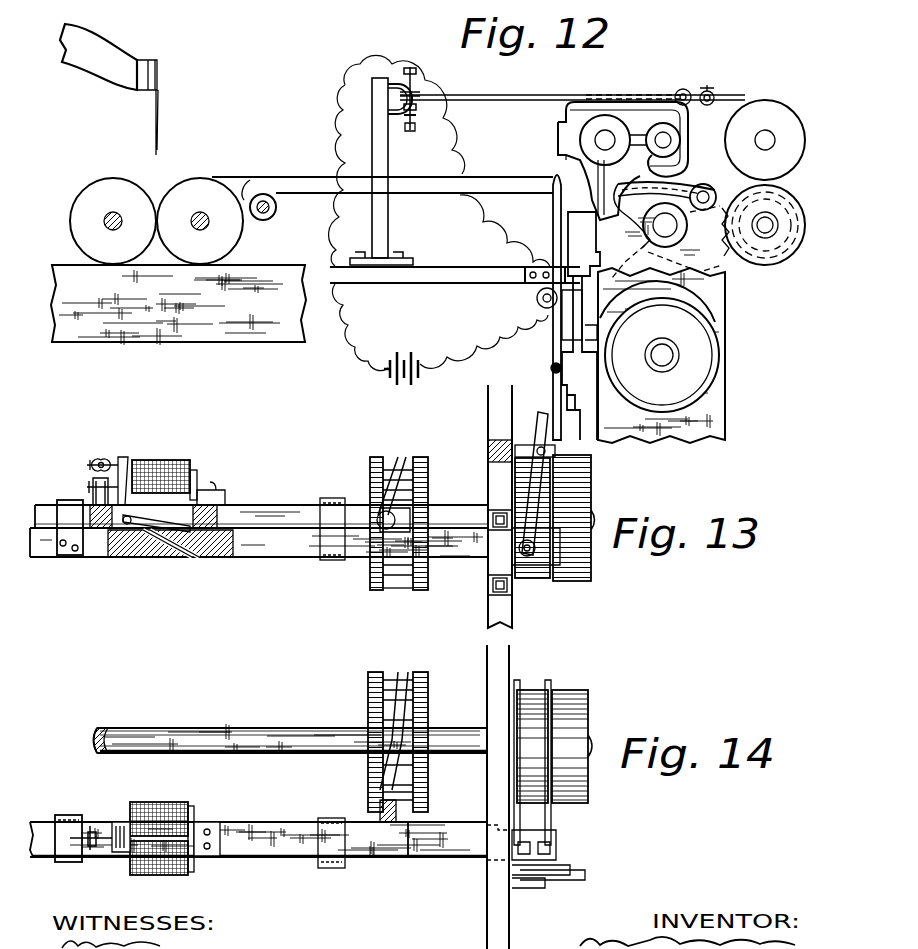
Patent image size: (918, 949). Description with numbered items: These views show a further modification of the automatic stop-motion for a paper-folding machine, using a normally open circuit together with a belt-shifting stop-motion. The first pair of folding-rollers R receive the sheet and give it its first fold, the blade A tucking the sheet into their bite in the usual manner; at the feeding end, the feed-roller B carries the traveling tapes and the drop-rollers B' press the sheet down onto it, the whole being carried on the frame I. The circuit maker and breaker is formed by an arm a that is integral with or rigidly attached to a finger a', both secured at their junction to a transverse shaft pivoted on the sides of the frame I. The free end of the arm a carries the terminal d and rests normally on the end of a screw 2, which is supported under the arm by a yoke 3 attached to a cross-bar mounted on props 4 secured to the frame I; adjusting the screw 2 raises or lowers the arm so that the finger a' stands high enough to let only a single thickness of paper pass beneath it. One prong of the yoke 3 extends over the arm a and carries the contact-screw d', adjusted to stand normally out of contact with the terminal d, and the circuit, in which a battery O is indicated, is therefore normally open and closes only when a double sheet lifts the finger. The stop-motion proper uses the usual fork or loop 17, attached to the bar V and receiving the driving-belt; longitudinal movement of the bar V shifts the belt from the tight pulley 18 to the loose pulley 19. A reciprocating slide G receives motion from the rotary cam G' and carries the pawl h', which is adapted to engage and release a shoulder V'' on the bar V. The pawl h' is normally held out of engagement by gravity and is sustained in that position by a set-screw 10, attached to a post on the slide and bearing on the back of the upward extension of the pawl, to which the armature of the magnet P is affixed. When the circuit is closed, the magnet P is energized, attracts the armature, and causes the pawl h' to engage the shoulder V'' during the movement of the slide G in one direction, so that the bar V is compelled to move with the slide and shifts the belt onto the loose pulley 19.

In FIG. 12, the blade A is at (158, 128).
In FIG. 12, the folding-rollers R is at (311, 220).
In FIG. 12, the frame I is at (742, 300).
In FIG. 13, the frame I is at (488, 612).
In FIG. 14, the frame I is at (487, 787).
In FIG. 12, the props 4 is at (372, 158).
In FIG. 12, the terminal d is at (418, 92).
In FIG. 12, the contact-screw d' is at (417, 90).
In FIG. 12, the yoke 3 is at (404, 120).
In FIG. 12, the screw 2 is at (409, 132).
In FIG. 12, the arm a is at (572, 87).
In FIG. 12, the finger a' is at (636, 152).
In FIG. 12, the drop-rollers B' is at (765, 140).
In FIG. 12, the feed-roller B is at (768, 214).
In FIG. 12, the battery O is at (401, 357).
In FIG. 12, the fork or loop 17 is at (690, 302).
In FIG. 13, the fork or loop 17 is at (552, 460).
In FIG. 14, the fork or loop 17 is at (525, 676).
In FIG. 12, the loose pulley 19 is at (662, 355).
In FIG. 13, the loose pulley 19 is at (573, 588).
In FIG. 14, the loose pulley 19 is at (572, 746).
In FIG. 13, the tight pulley 18 is at (538, 588).
In FIG. 14, the tight pulley 18 is at (532, 746).
In FIG. 12, the bar V is at (465, 307).
In FIG. 13, the bar V is at (459, 545).
In FIG. 14, the bar V is at (445, 873).
In FIG. 13, the shoulder V'' is at (171, 560).
In FIG. 13, the magnet P is at (175, 462).
In FIG. 14, the magnet P is at (168, 805).
In FIG. 13, the set-screw 10 is at (87, 488).
In FIG. 13, the pawl h' is at (153, 516).
In FIG. 13, the reciprocating slide G is at (259, 520).
In FIG. 14, the reciprocating slide G is at (258, 796).
In FIG. 13, the rotary cam G' is at (399, 510).
In FIG. 14, the rotary cam G' is at (398, 732).